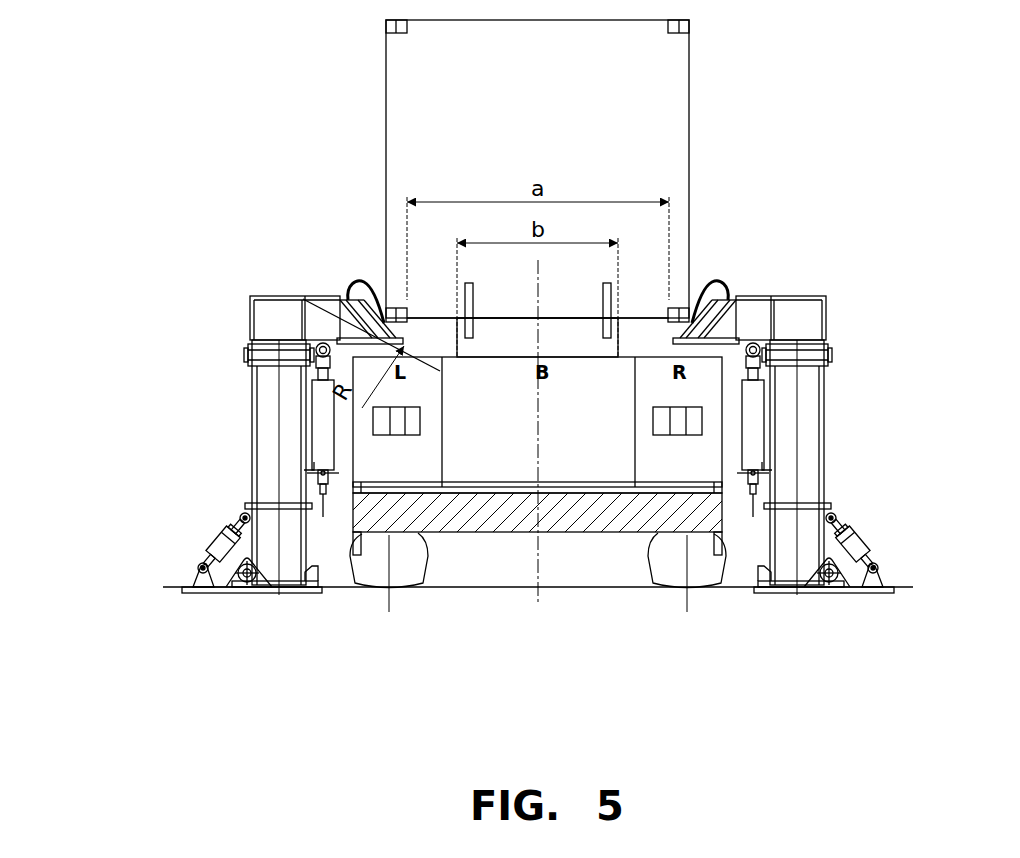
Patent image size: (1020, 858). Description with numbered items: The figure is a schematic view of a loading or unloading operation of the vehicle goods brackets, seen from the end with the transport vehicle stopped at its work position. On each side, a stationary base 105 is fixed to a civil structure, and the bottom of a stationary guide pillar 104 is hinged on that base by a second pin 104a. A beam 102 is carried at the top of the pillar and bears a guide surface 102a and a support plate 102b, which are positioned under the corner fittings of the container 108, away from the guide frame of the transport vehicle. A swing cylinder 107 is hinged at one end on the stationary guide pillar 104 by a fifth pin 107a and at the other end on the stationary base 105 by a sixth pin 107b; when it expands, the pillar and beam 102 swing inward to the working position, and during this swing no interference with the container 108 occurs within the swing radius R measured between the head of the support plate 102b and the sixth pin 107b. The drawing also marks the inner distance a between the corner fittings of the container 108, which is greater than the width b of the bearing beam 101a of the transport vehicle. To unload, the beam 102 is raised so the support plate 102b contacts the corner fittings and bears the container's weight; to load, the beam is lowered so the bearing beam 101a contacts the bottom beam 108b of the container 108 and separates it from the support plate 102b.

The bearing beam 101a is at (585, 338).
The beam 102 is at (290, 305).
The guide surface 102a is at (357, 320).
The support plate 102b is at (385, 317).
The stationary guide pillar 104 is at (262, 425).
The second pin 104a is at (243, 575).
The stationary base 105 is at (322, 592).
The swing cylinder 107 is at (213, 557).
The fifth pin 107a is at (245, 516).
The sixth pin 107b is at (203, 568).
The container 108 is at (647, 167).
The bottom beam 108b is at (540, 320).